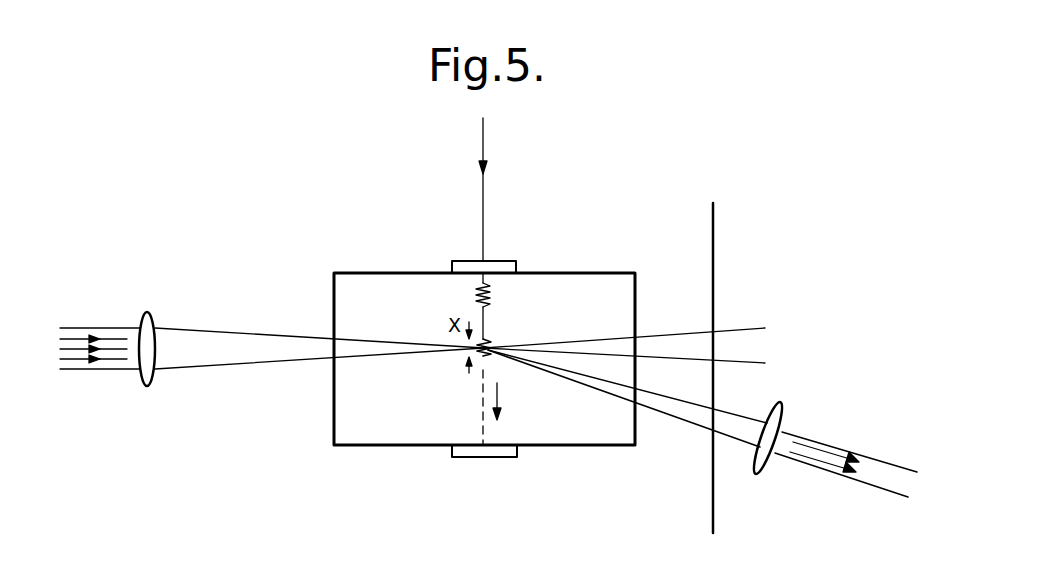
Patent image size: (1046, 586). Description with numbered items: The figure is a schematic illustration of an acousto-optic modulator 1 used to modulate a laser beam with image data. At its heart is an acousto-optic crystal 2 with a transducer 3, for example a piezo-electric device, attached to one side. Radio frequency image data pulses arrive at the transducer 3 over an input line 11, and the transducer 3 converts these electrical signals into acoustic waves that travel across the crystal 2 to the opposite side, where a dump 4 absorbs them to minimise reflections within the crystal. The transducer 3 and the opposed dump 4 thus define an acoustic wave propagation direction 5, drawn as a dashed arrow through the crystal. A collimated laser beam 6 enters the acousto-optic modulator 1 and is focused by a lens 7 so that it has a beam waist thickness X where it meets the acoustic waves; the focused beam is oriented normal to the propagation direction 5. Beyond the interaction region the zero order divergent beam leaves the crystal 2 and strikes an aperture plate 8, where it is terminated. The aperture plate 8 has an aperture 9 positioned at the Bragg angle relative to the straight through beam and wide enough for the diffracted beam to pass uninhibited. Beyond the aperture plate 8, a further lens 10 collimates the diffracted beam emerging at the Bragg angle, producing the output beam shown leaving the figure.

The acousto-optic modulator 1 is at (262, 231).
The acousto-optic crystal 2 is at (362, 271).
The transducer 3 is at (508, 260).
The dump 4 is at (498, 457).
The acoustic wave propagation direction 5 is at (499, 396).
The collimated laser beam 6 is at (112, 328).
The lens 7 is at (154, 378).
The aperture plate 8 is at (714, 230).
The aperture 9 is at (717, 407).
The further lens 10 is at (770, 472).
The input line 11 is at (486, 208).